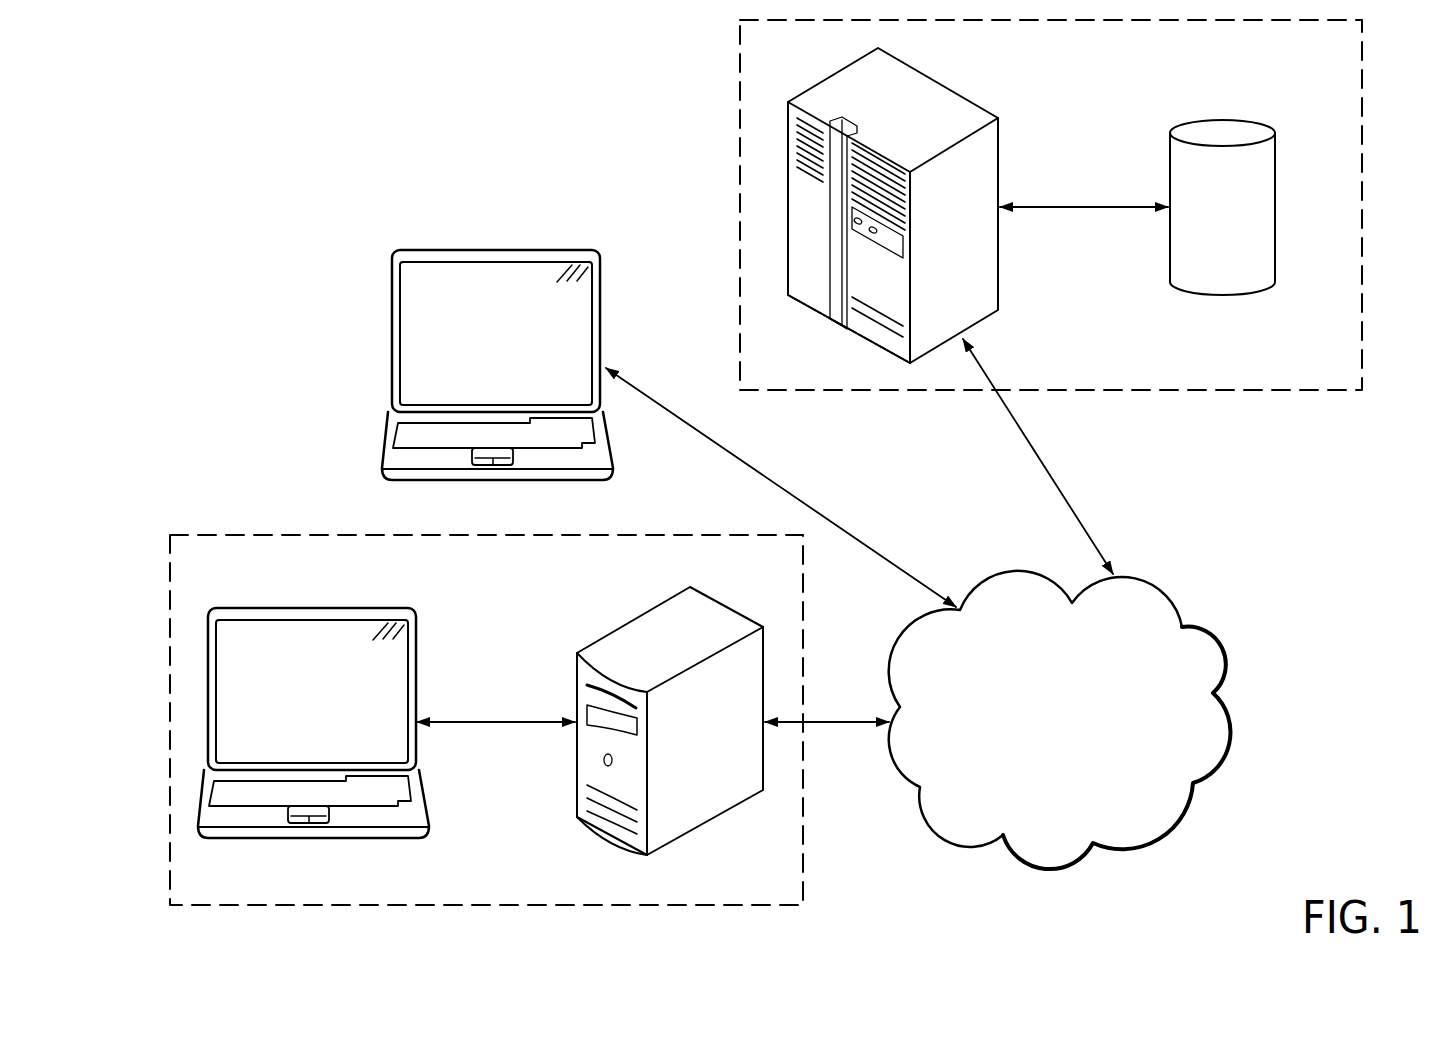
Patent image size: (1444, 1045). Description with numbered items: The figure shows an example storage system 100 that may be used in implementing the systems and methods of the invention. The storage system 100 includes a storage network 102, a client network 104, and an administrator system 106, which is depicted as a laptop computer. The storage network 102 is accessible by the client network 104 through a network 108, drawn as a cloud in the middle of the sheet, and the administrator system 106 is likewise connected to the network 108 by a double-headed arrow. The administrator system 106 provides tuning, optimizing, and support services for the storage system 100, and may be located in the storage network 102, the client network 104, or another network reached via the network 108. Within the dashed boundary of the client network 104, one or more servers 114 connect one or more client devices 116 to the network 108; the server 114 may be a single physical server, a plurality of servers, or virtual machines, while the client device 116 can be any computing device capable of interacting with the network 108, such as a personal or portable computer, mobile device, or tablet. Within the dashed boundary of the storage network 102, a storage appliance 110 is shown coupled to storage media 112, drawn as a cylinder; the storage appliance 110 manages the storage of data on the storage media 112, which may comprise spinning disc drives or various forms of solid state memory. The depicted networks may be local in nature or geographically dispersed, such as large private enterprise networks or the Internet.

The storage system 100 is at (265, 134).
The storage network 102 is at (1070, 91).
The client network 104 is at (506, 897).
The administrator system 106 is at (392, 325).
The network 108 is at (1077, 746).
The storage appliance 110 is at (788, 183).
The storage media 112 is at (1275, 183).
The server 114 is at (713, 818).
The client device 116 is at (208, 710).